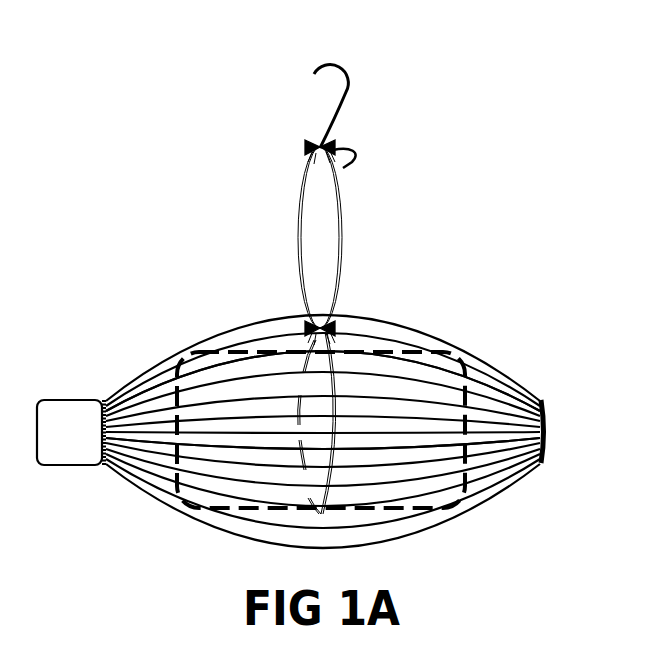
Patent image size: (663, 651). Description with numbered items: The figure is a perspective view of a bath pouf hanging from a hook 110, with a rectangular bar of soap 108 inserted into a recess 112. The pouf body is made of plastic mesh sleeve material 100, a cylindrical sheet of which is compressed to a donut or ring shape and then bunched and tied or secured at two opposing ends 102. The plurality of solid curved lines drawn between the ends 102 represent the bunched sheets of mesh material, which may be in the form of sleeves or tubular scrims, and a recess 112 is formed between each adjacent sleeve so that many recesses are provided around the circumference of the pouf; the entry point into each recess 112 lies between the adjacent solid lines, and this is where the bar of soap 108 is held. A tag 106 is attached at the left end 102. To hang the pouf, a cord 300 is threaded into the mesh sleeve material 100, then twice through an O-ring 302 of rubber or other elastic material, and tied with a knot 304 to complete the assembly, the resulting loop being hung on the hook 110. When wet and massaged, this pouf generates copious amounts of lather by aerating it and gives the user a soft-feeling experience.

The mesh material 100 is at (483, 507).
The ends 102 is at (104, 402).
The tag 106 is at (73, 467).
The bar of soap 108 is at (225, 513).
The hook 110 is at (313, 72).
The recess 112 is at (253, 408).
The cord 300 is at (340, 222).
The O-ring 302 is at (332, 320).
The knot 304 is at (330, 141).